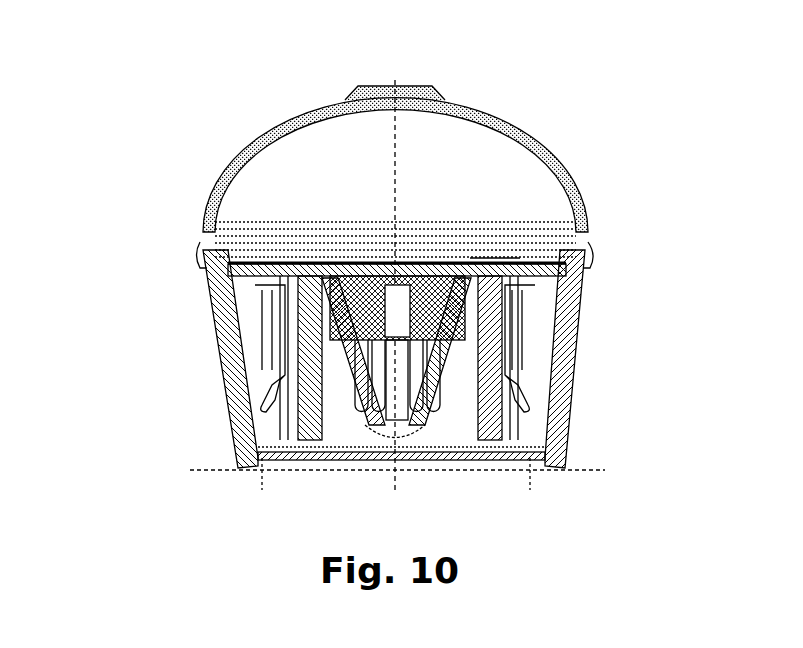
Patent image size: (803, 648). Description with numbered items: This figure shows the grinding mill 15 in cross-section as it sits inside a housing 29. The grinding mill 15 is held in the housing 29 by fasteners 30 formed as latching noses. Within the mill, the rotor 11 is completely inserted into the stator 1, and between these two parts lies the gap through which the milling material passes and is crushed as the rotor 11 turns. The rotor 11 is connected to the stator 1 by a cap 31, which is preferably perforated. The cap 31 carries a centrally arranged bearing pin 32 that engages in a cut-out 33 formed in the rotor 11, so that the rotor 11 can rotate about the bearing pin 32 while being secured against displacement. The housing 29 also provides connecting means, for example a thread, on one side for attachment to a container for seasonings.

The housing 29 is at (185, 236).
The cap 31 is at (530, 265).
The stator 1 is at (305, 295).
The bearing pin 32 is at (405, 295).
The rotor 11 is at (325, 302).
The grinding mill 15 is at (458, 310).
The cut-out 33 is at (415, 414).
The fasteners 30 is at (257, 405).